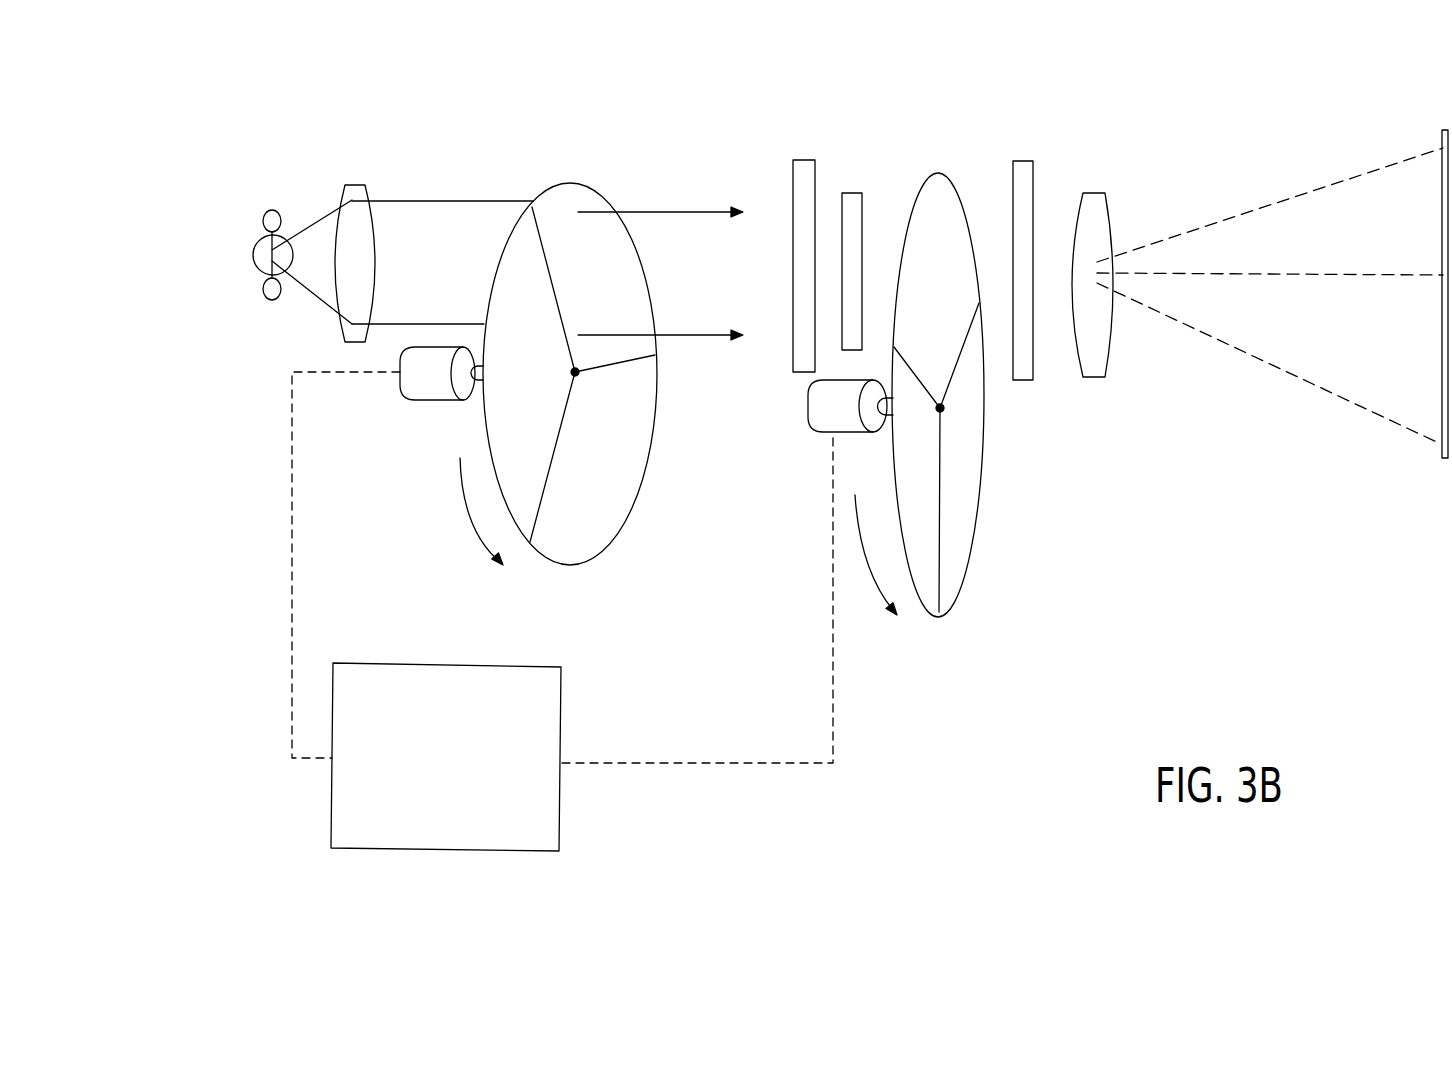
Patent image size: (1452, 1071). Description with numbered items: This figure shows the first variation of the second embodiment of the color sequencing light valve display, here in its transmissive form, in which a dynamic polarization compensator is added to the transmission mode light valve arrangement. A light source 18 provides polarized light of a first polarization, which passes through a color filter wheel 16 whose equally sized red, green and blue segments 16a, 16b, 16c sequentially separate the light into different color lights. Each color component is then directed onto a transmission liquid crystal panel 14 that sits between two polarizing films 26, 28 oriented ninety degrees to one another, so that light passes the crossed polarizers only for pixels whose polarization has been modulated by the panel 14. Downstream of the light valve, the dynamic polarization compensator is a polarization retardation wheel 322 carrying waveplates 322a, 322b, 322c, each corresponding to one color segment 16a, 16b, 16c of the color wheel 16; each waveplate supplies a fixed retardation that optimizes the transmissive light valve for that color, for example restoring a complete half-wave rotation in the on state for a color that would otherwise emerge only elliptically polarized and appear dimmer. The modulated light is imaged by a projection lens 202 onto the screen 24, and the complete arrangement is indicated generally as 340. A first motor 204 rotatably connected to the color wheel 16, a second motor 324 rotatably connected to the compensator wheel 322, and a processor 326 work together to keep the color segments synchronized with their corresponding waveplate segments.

The light source 18 is at (255, 252).
The color filter wheel 16 is at (570, 364).
The red segment of color filter wheel 16a is at (572, 198).
The green segment of color filter wheel 16b is at (635, 437).
The blue segment of color filter wheel 16c is at (523, 253).
The first motor 204 is at (423, 400).
The polarizing film 26 is at (802, 158).
The transmission liquid crystal panel 14 is at (855, 192).
The polarizing film 28 is at (1033, 168).
The polarization retardation wheel 322 is at (986, 361).
The waveplate 322a is at (942, 212).
The waveplate 322b is at (967, 475).
The waveplate 322c is at (928, 573).
The second motor 324 is at (808, 413).
The projection lens 202 is at (1105, 192).
The screen 24 is at (1443, 140).
The projection display system 340 is at (1172, 466).
The processor 326 is at (490, 853).